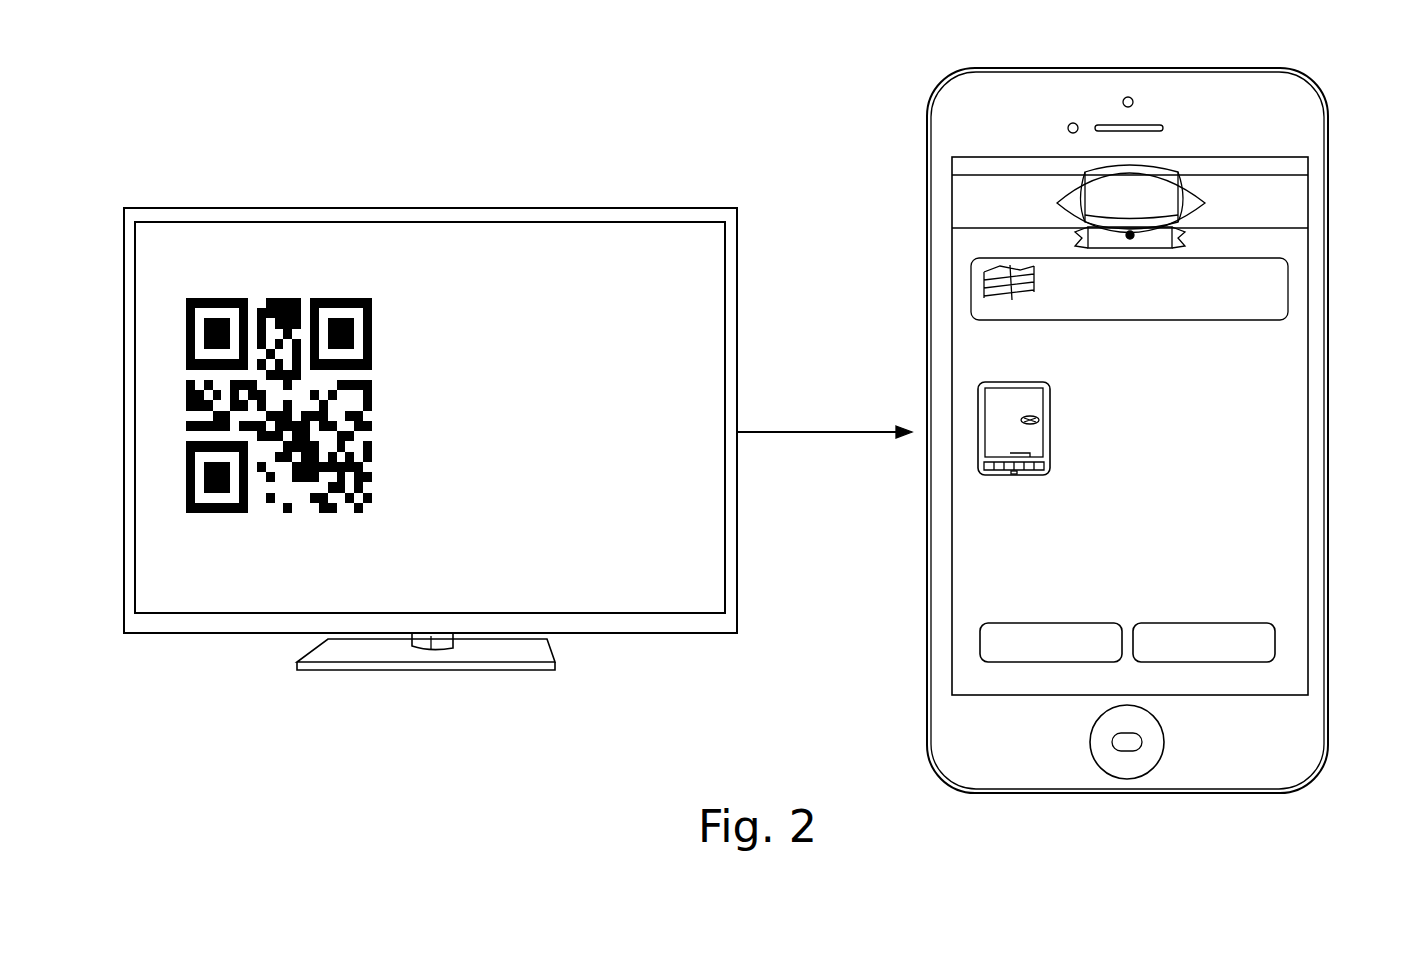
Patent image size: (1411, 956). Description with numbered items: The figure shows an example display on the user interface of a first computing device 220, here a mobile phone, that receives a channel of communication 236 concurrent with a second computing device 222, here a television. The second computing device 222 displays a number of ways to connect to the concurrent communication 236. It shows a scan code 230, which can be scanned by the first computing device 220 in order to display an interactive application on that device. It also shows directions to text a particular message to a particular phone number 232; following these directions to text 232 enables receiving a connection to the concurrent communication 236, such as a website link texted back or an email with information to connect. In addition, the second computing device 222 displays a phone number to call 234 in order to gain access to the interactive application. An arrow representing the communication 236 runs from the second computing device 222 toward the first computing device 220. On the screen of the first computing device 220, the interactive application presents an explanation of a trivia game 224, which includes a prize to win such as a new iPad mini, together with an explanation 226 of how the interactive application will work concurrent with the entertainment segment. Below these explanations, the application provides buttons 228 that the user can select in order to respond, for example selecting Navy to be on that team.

The first computing device 220 is at (1226, 67).
The second computing device 222 is at (140, 207).
The explanation of a trivia game 224 is at (1290, 347).
The explanation of how the interactive application will work 226 is at (1290, 430).
The buttons 228 is at (1275, 642).
The scan code 230 is at (272, 297).
The directions to text a particular message to a particular phone number 232 is at (468, 367).
The phone number to call 234 is at (622, 348).
The communication 236 is at (804, 430).